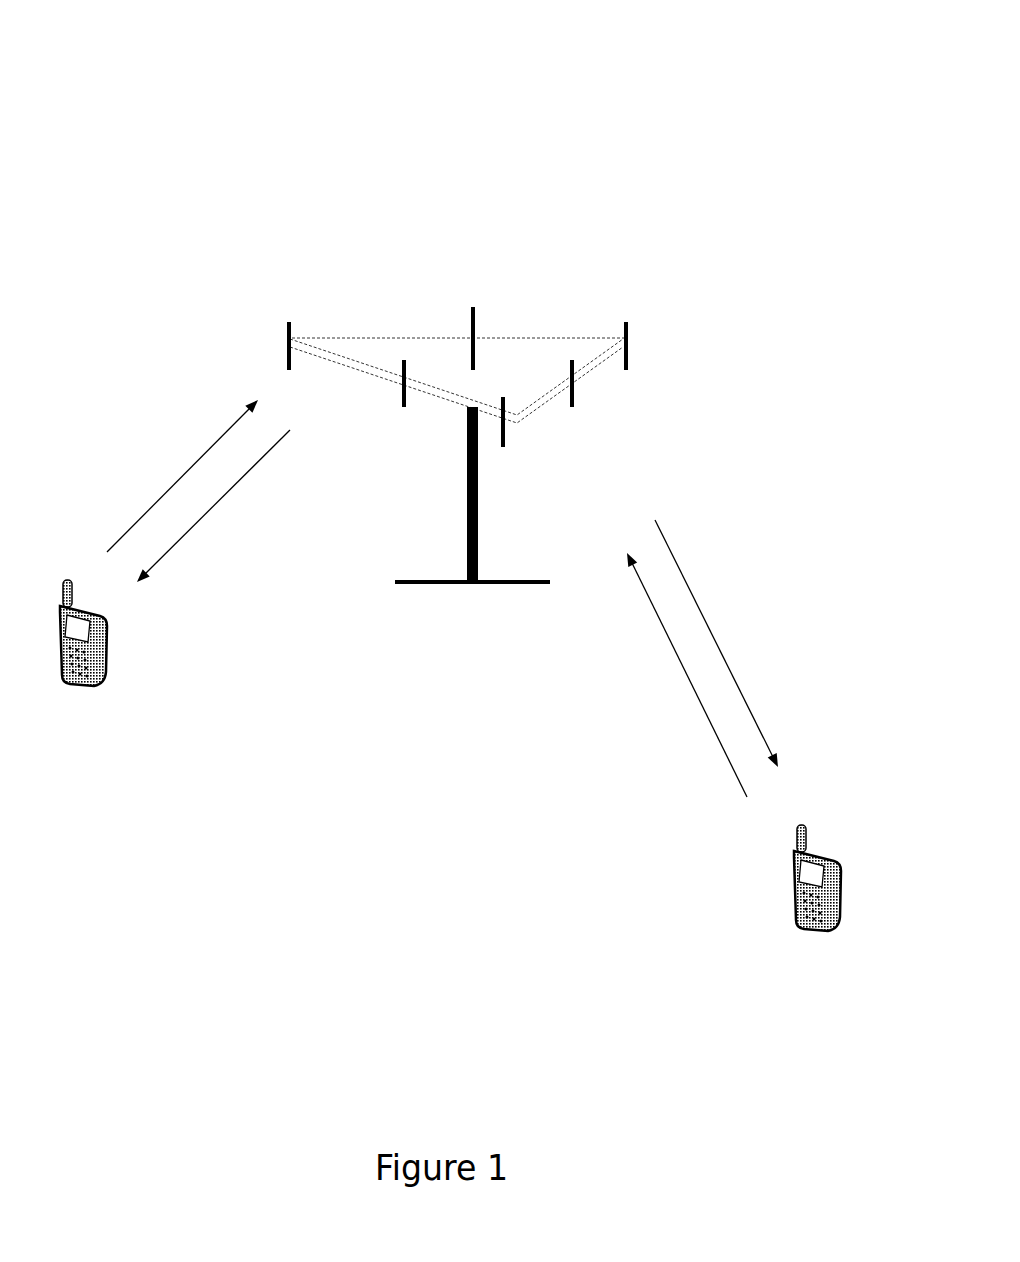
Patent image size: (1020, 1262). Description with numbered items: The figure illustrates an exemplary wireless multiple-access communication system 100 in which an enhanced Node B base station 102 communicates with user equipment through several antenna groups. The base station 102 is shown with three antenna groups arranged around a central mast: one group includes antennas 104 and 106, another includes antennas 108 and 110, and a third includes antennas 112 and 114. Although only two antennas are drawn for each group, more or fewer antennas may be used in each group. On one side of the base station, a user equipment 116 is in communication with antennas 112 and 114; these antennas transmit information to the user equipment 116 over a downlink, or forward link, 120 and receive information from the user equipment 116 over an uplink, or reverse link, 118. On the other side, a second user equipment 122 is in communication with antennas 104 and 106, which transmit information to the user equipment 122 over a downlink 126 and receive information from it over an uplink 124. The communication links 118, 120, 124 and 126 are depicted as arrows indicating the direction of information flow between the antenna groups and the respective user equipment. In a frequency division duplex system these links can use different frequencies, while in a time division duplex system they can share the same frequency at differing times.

The wireless multiple-access communication system 100 is at (720, 101).
The enhanced Node B base station 102 is at (447, 530).
The antenna 104 is at (567, 434).
The antenna 106 is at (640, 392).
The antenna 108 is at (690, 346).
The antenna 110 is at (533, 314).
The antenna 112 is at (237, 322).
The antenna 114 is at (355, 415).
The user equipment 116 is at (130, 663).
The uplink 118 is at (165, 476).
The downlink 120 is at (213, 527).
The user equipment 122 is at (769, 904).
The uplink 124 is at (662, 675).
The downlink 126 is at (734, 643).